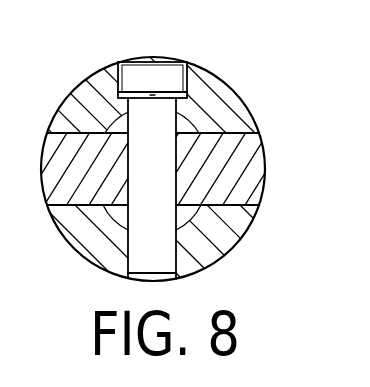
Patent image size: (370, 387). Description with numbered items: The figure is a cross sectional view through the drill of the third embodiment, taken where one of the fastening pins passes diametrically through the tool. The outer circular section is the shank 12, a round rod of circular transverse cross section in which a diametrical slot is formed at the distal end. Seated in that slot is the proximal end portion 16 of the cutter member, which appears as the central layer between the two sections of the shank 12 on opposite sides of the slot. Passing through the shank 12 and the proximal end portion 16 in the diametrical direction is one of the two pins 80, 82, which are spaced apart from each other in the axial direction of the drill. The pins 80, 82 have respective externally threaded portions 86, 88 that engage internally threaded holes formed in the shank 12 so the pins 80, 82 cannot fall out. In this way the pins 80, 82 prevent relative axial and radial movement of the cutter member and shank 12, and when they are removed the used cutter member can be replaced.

The shank 12 is at (232, 110).
The proximal end portion 16 is at (250, 170).
The pin 80 is at (158, 141).
The pin 82 is at (104, 146).
The externally threaded portion 86 is at (104, 55).
The externally threaded portion 88 is at (140, 73).